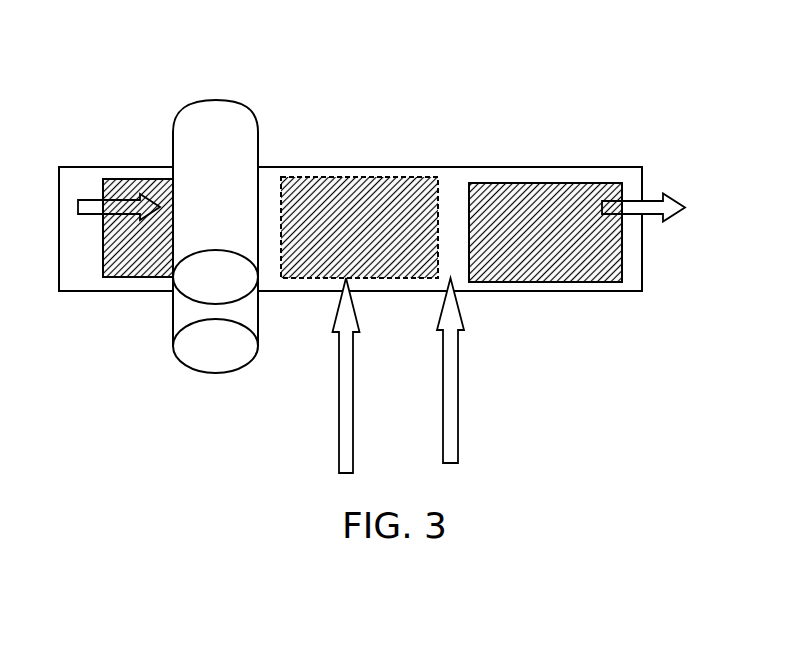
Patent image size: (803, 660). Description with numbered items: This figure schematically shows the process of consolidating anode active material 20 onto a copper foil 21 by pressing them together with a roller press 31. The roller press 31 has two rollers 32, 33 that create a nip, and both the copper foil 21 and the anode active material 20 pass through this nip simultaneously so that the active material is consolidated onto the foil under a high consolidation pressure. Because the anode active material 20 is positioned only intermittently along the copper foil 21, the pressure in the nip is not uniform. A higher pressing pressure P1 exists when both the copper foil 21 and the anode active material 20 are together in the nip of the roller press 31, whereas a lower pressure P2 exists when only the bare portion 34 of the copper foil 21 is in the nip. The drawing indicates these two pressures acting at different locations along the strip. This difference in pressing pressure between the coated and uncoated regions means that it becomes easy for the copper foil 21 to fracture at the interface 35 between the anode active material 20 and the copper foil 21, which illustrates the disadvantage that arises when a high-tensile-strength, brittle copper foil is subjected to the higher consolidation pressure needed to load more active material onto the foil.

The anode active material 20 is at (568, 183).
The copper foil 21 is at (643, 263).
The roller press 31 is at (163, 129).
The roller 32 is at (218, 98).
The roller 33 is at (213, 362).
The portion of copper foil 34 is at (273, 175).
The interface 35 is at (403, 177).
The pressing pressure P1 is at (353, 428).
The pressure P2 is at (458, 428).